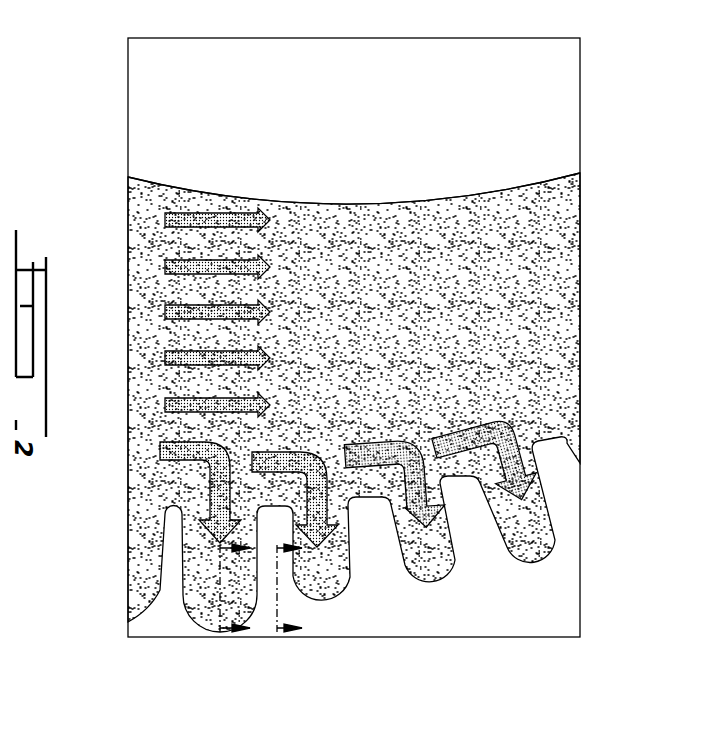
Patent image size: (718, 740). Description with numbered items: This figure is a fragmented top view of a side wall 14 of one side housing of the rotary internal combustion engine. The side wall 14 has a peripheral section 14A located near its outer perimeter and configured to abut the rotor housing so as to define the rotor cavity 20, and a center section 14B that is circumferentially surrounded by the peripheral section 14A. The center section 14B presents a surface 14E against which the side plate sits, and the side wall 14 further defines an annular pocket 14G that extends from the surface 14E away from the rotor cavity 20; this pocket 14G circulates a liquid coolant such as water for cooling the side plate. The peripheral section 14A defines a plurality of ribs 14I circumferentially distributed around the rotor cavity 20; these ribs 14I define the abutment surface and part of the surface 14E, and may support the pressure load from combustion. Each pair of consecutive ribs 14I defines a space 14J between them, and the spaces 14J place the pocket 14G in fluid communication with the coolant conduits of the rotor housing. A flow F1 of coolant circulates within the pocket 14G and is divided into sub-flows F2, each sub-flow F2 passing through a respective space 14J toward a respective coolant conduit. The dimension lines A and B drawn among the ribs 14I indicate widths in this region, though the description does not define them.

The side wall 14 is at (606, 574).
The peripheral section 14A is at (113, 653).
The center section 14B is at (165, 127).
The surface of the center section 14E is at (213, 160).
The pocket 14G is at (393, 345).
The ribs 14I is at (356, 560).
The spaces 14J is at (423, 570).
The rotor cavity 20 is at (336, 86).
The flow F1 is at (192, 262).
The sub-flows F2 is at (162, 458).
The dimension A is at (240, 598).
The dimension B is at (286, 588).